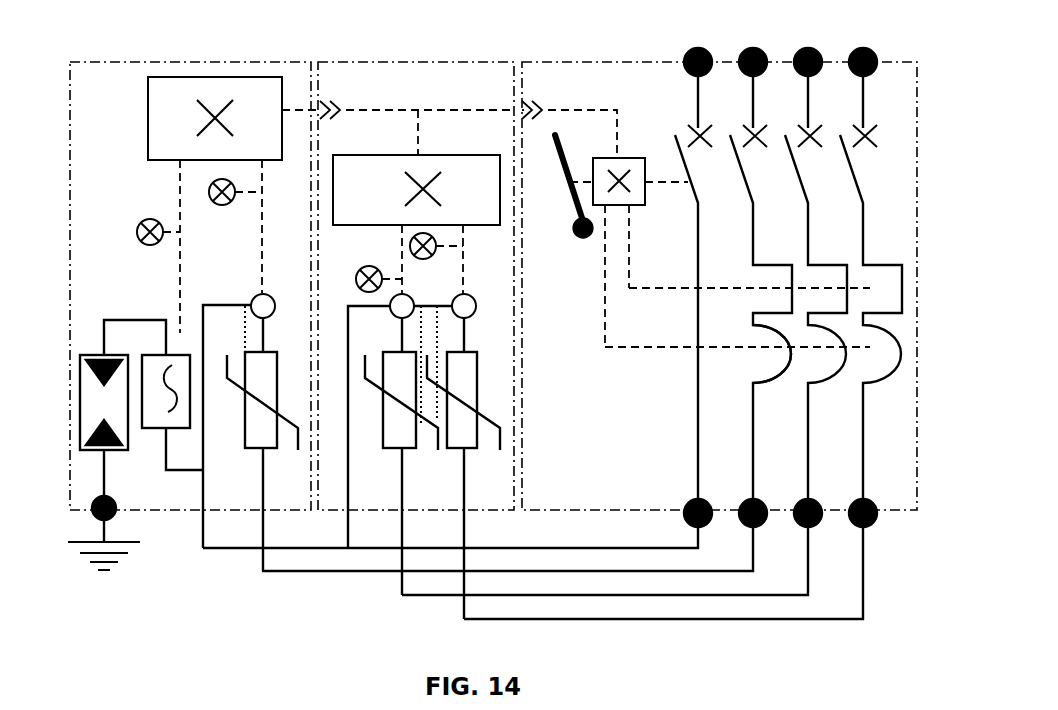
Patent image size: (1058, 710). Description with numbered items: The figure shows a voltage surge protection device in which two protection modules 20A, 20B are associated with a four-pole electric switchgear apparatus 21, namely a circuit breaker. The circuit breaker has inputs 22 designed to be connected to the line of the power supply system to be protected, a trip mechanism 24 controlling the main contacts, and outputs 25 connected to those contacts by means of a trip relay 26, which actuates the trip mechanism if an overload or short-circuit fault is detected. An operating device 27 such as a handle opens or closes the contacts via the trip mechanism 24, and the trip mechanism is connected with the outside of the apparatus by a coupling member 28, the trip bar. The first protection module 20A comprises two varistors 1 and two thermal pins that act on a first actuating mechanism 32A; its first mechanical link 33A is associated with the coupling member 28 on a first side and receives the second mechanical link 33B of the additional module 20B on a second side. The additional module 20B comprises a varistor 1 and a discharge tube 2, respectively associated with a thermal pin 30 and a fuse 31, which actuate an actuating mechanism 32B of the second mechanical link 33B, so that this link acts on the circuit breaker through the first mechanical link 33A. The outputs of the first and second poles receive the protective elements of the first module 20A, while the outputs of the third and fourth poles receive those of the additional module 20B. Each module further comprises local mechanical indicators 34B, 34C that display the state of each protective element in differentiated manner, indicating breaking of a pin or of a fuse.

The varistor 1 is at (257, 442).
The discharge tube 2 is at (120, 423).
The first protection module 20A is at (405, 62).
The additional protection module 20B is at (157, 62).
The electric switchgear apparatus 21 is at (617, 62).
The inputs 22 is at (852, 40).
The trip mechanism 24 is at (632, 158).
The outputs 25 is at (776, 528).
The trip relay 26 is at (763, 340).
The operating device 27 is at (565, 156).
The coupling member 28 is at (545, 108).
The thermal pin 30 is at (254, 298).
The fuse 31 is at (158, 370).
The first actuating mechanism 32A is at (465, 155).
The actuating mechanism 32B is at (215, 77).
The first mechanical link 33A is at (355, 108).
The second mechanical link 33B is at (300, 108).
The local mechanical indicator 34B is at (410, 242).
The local mechanical indicator 34C is at (209, 194).